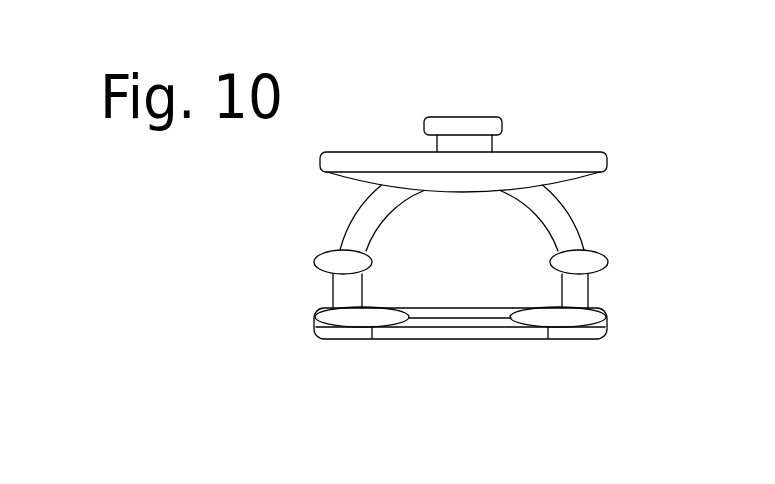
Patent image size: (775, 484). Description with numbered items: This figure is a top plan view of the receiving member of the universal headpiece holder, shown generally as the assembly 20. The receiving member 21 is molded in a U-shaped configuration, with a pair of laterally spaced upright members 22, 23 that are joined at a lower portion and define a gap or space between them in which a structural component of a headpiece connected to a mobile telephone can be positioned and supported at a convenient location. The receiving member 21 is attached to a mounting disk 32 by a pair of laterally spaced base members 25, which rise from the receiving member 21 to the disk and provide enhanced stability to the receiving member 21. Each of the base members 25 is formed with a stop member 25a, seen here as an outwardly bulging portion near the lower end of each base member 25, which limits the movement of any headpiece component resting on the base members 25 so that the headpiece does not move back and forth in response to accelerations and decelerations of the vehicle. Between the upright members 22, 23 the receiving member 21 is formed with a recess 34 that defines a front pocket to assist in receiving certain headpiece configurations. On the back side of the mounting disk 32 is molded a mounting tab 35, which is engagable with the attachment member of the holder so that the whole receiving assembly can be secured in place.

The clip assembly 20 is at (594, 110).
The receiving member 21 is at (390, 334).
The upright member 22 is at (330, 316).
The upright member 23 is at (580, 313).
The base member 25 is at (355, 228).
The stop member 25a is at (340, 263).
The mounting disk 32 is at (606, 158).
The recess 34 is at (491, 328).
The mounting tab 35 is at (457, 120).